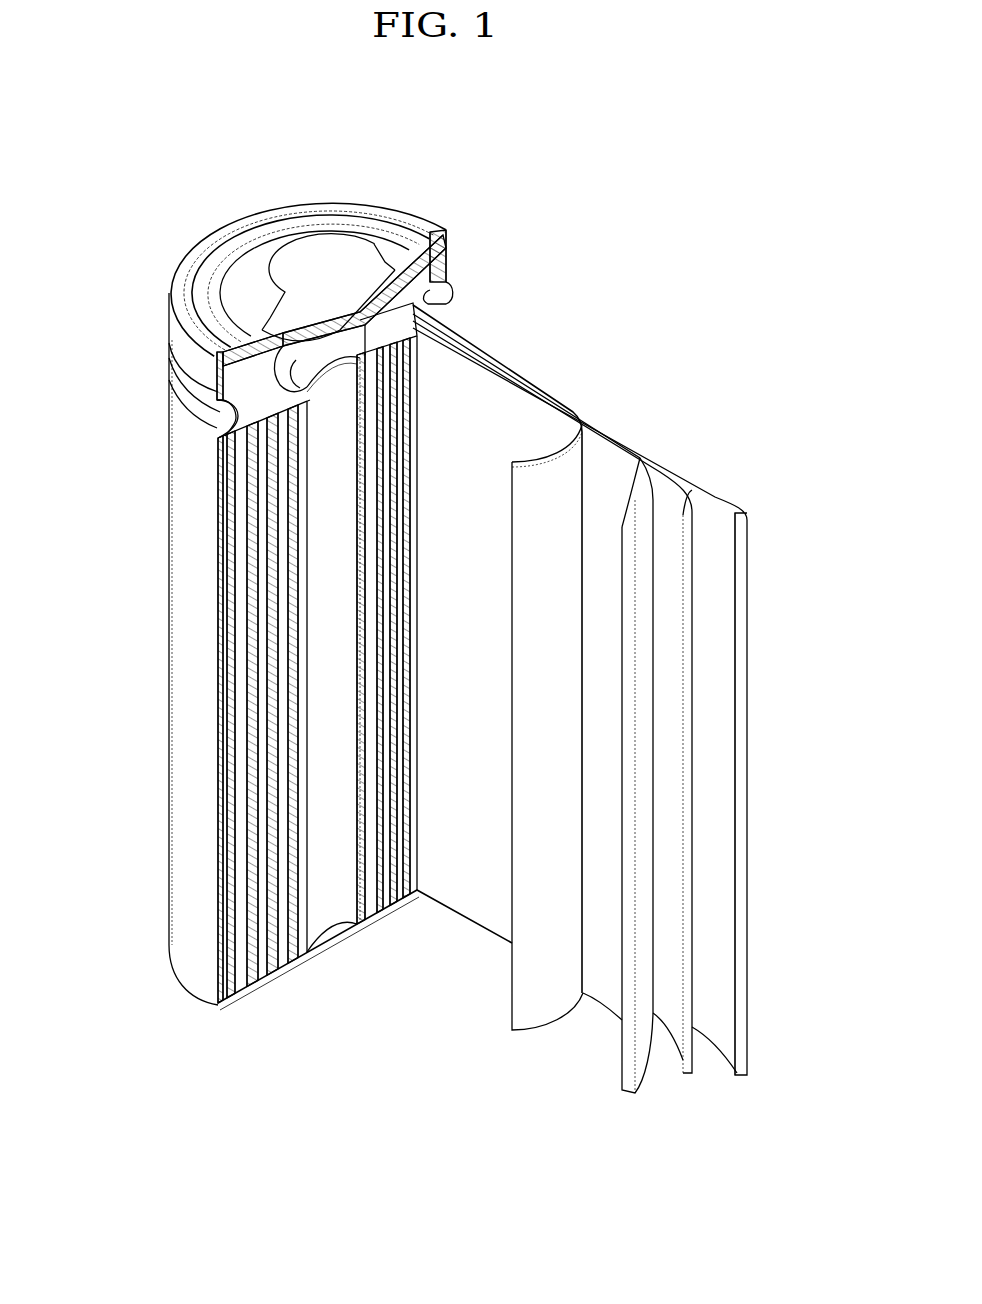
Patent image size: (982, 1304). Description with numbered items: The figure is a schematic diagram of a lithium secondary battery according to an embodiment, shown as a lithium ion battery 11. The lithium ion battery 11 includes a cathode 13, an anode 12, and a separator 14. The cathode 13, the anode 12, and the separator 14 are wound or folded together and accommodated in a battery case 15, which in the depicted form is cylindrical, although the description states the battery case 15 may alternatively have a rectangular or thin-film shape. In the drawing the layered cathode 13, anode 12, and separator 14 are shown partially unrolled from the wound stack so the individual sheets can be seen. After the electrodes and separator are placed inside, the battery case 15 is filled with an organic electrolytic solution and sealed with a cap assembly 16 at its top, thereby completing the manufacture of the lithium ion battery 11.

The lithium ion battery 11 is at (558, 238).
The anode 12 is at (737, 490).
The cathode 13 is at (612, 437).
The separator 14 is at (518, 380).
The battery case 15 is at (178, 593).
The cap assembly 16 is at (308, 250).